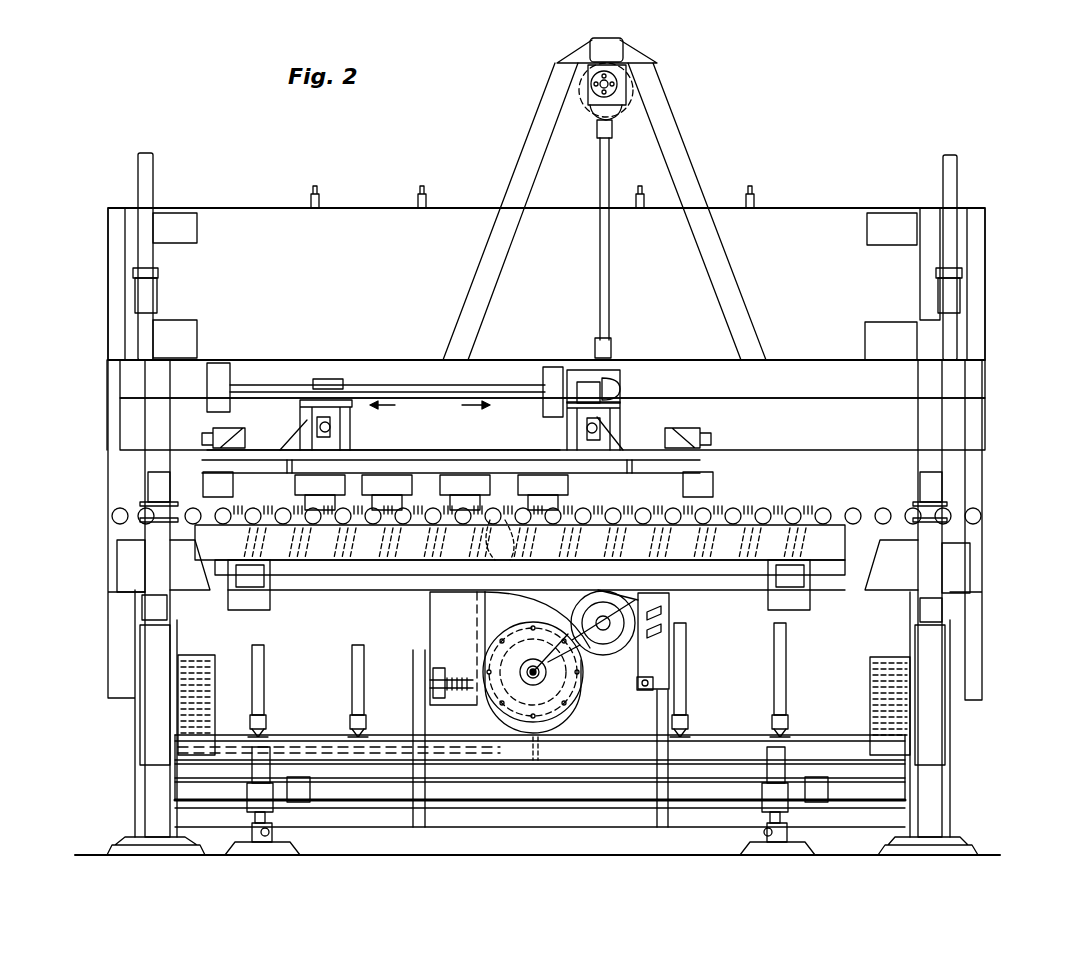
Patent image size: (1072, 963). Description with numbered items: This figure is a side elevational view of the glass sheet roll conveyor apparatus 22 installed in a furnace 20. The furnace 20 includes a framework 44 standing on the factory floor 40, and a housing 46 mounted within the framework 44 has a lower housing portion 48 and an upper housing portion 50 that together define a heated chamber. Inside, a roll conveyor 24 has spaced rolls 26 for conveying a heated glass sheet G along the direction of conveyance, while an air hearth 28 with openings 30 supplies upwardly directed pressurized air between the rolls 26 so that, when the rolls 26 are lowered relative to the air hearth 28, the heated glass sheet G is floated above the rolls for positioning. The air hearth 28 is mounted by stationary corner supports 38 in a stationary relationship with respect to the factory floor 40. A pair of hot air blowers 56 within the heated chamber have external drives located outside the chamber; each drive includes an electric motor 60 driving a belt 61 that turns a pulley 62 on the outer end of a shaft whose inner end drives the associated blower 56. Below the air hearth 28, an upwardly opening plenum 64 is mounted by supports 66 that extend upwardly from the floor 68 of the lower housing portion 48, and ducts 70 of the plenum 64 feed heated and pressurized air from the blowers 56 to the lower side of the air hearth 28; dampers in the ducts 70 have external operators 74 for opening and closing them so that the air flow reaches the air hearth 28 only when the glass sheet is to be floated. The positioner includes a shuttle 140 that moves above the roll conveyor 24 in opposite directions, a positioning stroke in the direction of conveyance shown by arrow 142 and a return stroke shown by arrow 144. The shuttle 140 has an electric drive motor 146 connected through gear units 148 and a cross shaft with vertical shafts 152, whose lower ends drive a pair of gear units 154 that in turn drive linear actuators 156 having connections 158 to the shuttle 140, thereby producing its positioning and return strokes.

The furnace 20 is at (852, 182).
The apparatus 22 is at (745, 410).
The roll conveyor 24 is at (546, 405).
The rolls 26 is at (715, 518).
The air hearth 28 is at (770, 535).
The openings 30 is at (500, 532).
The stationary corner supports 38 is at (255, 760).
The factory floor 40 is at (565, 858).
The framework 44 is at (960, 545).
The housing 46 is at (905, 278).
The lower housing portion 48 is at (905, 702).
The upper housing portion 50 is at (800, 212).
The hot air blowers 56 is at (580, 680).
The electric motor 60 is at (602, 608).
The belt 61 is at (585, 640).
The pulley 62 is at (528, 670).
The plenum 64 is at (698, 590).
The supports 66 is at (352, 672).
The floor 68 is at (712, 745).
The ducts 70 is at (312, 600).
The external operators 74 is at (422, 662).
The shuttle 140 is at (425, 440).
The arrow 142 is at (462, 388).
The arrow 144 is at (373, 388).
The electric drive motor 146 is at (612, 108).
The gear units 148 is at (618, 86).
The vertical shafts 152 is at (608, 172).
The gear units 154 is at (640, 365).
The linear actuators 156 is at (395, 388).
The connections 158 is at (320, 418).
The heated glass sheet G is at (380, 560).